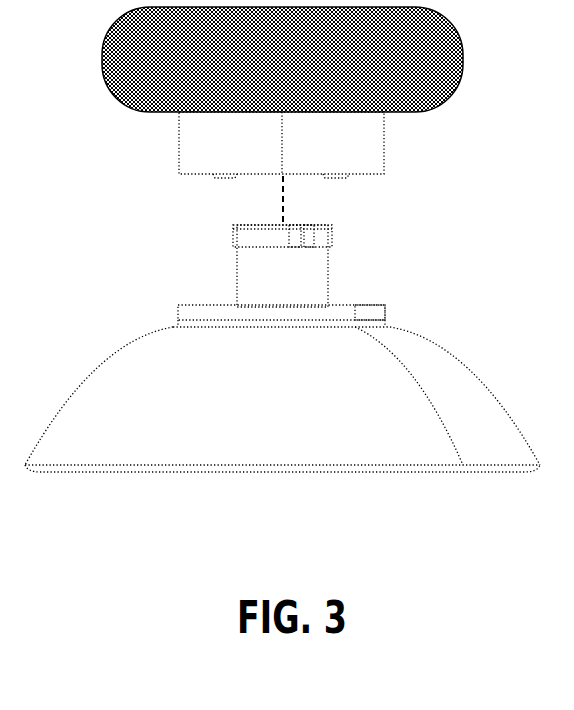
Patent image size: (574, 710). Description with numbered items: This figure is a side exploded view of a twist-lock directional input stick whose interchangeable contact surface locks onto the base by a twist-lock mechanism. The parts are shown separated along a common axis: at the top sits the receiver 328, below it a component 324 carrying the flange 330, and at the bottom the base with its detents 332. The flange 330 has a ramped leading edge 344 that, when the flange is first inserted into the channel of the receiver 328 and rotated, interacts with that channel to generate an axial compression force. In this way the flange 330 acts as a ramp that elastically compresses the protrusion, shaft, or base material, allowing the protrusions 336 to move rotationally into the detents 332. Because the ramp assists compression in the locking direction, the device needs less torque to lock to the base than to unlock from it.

The body 324 is at (330, 281).
The receiver 328 is at (366, 192).
The flange 330 is at (330, 233).
The detents 332 is at (194, 302).
The protrusions 336 is at (220, 178).
The ramped leading edge 344 is at (231, 252).